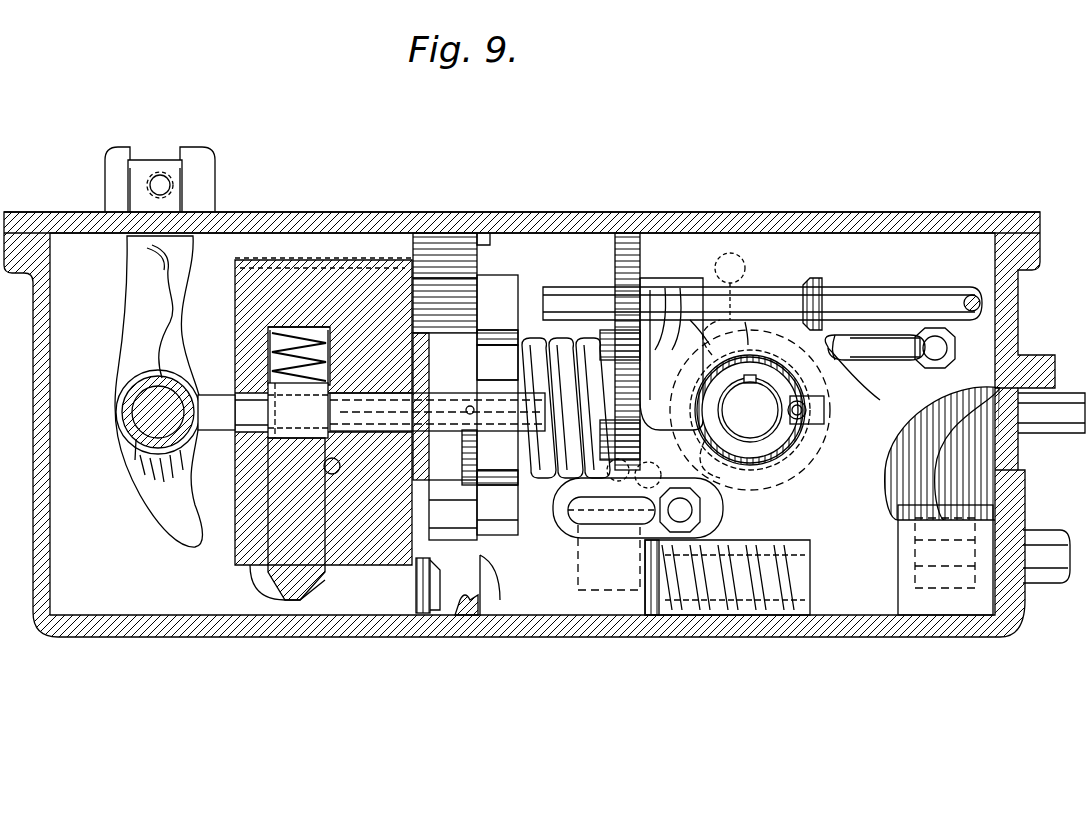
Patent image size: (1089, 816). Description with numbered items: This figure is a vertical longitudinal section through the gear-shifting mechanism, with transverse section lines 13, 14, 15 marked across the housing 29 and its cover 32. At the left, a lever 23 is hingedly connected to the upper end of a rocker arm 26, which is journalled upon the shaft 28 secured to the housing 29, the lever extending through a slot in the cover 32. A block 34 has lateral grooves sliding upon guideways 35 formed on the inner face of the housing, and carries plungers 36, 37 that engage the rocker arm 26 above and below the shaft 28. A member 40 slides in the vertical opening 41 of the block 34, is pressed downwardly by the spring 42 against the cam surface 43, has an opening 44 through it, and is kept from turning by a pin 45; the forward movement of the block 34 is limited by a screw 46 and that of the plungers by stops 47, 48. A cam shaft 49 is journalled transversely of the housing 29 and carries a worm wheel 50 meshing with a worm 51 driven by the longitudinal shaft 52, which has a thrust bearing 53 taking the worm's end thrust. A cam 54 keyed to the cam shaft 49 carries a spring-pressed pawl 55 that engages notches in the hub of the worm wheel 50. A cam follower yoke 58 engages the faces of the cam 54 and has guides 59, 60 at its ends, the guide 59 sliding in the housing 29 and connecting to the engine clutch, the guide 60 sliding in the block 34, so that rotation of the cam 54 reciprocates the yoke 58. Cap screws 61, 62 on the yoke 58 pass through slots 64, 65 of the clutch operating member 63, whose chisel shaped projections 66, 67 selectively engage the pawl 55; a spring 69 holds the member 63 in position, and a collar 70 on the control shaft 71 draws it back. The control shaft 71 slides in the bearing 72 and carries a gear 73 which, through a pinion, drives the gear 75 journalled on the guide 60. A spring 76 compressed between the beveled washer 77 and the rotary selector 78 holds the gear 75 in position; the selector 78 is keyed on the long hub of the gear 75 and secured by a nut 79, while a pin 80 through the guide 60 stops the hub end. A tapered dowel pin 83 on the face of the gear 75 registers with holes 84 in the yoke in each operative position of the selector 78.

The section line 13 is at (802, 667).
The section line 14 is at (623, 667).
The section line 15 is at (215, 667).
The lever 23 is at (160, 185).
The rocker arm 26 is at (108, 181).
The shaft 28 is at (135, 412).
The housing 29 is at (44, 548).
The cover 32 is at (340, 212).
The block 34 is at (238, 272).
The guideways 35 is at (233, 412).
The plunger 36 is at (452, 292).
The plunger 37 is at (453, 510).
The member 40 is at (322, 577).
The vertical opening 41 is at (268, 330).
The spring 42 is at (268, 356).
The cam surface 43 is at (312, 598).
The opening 44 is at (292, 446).
The pin 45 is at (324, 468).
The screw 46 is at (432, 572).
The stop 47 is at (480, 252).
The stop 48 is at (470, 600).
The cam shaft 49 is at (750, 399).
The worm wheel 50 is at (730, 286).
The worm 51 is at (722, 615).
The shaft 52 is at (878, 552).
The thrust bearing 53 is at (655, 615).
The cam 54 is at (745, 348).
The pawl 55 is at (764, 410).
The cam follower yoke 58 is at (931, 457).
The guide 59 is at (1060, 436).
The guide 60 is at (418, 406).
The cap screw 61 is at (665, 522).
The cap screw 62 is at (935, 348).
The clutch operating member 63 is at (845, 362).
The slot 64 is at (592, 511).
The slot 65 is at (885, 348).
The chisel shaped projection 66 is at (708, 403).
The chisel shaped projection 67 is at (826, 410).
The spring 69 is at (742, 492).
The collar 70 is at (812, 300).
The control shaft 71 is at (930, 300).
The bearing 72 is at (672, 300).
The gear 73 is at (615, 253).
The gear 75 is at (700, 412).
The spring 76 is at (520, 352).
The beveled washer 77 is at (600, 340).
The rotary selector 78 is at (497, 405).
The nut 79 is at (463, 454).
The pin 80 is at (475, 410).
The tapered dowel pin 83 is at (618, 470).
The holes 84 is at (648, 475).